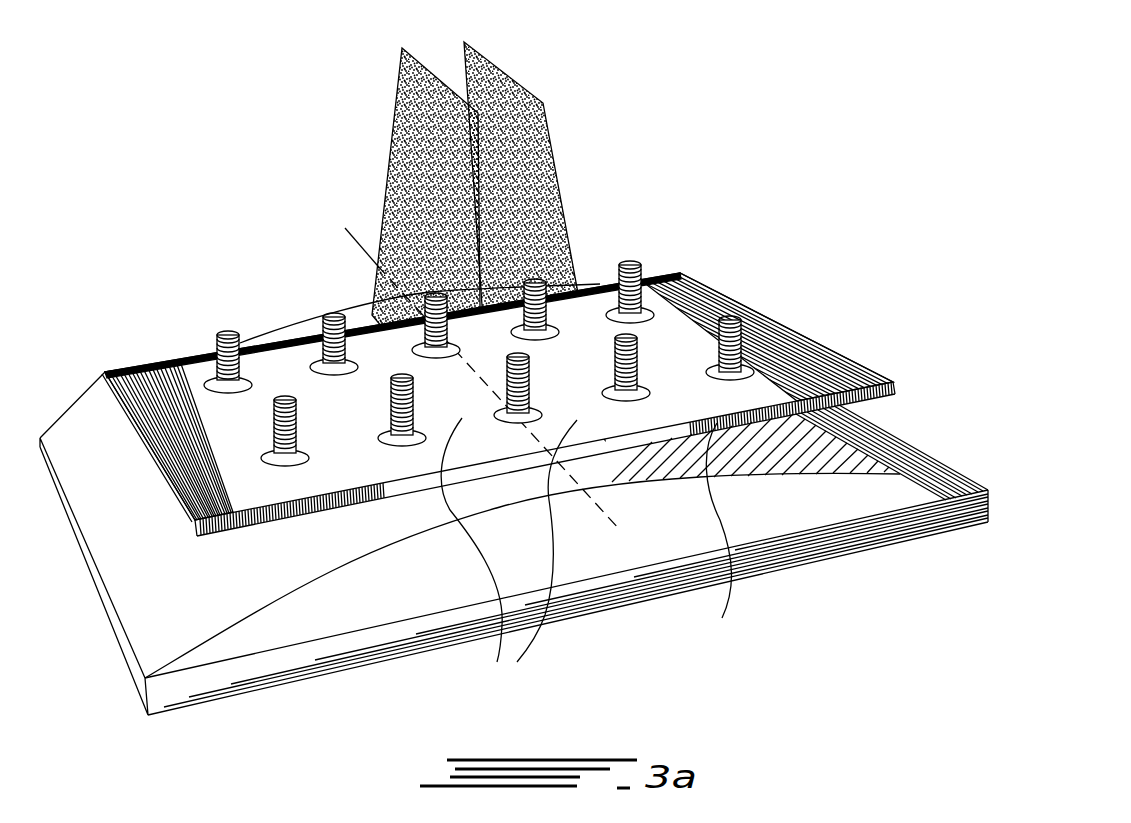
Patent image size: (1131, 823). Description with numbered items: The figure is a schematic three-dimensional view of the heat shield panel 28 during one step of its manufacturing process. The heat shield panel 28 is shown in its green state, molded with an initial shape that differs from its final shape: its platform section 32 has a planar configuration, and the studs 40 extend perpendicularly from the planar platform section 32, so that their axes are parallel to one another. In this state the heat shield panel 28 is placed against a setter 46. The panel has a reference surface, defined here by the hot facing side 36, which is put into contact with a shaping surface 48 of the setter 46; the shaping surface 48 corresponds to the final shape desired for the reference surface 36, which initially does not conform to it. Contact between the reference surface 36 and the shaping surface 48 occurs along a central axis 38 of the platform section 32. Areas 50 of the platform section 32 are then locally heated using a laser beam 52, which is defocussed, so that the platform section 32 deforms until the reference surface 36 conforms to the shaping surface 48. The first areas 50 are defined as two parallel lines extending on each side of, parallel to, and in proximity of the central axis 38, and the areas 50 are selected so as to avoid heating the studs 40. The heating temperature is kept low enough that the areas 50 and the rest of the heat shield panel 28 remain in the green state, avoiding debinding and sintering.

The heat shield panel 28 is at (523, 433).
The platform section 32 is at (812, 368).
The hot facing side 36 is at (720, 540).
The central axis 38 is at (362, 250).
The studs 40 is at (730, 318).
The setter 46 is at (960, 460).
The shaping surface 48 is at (883, 443).
The locally heated areas 50 is at (509, 559).
The laser beam 52 is at (520, 153).